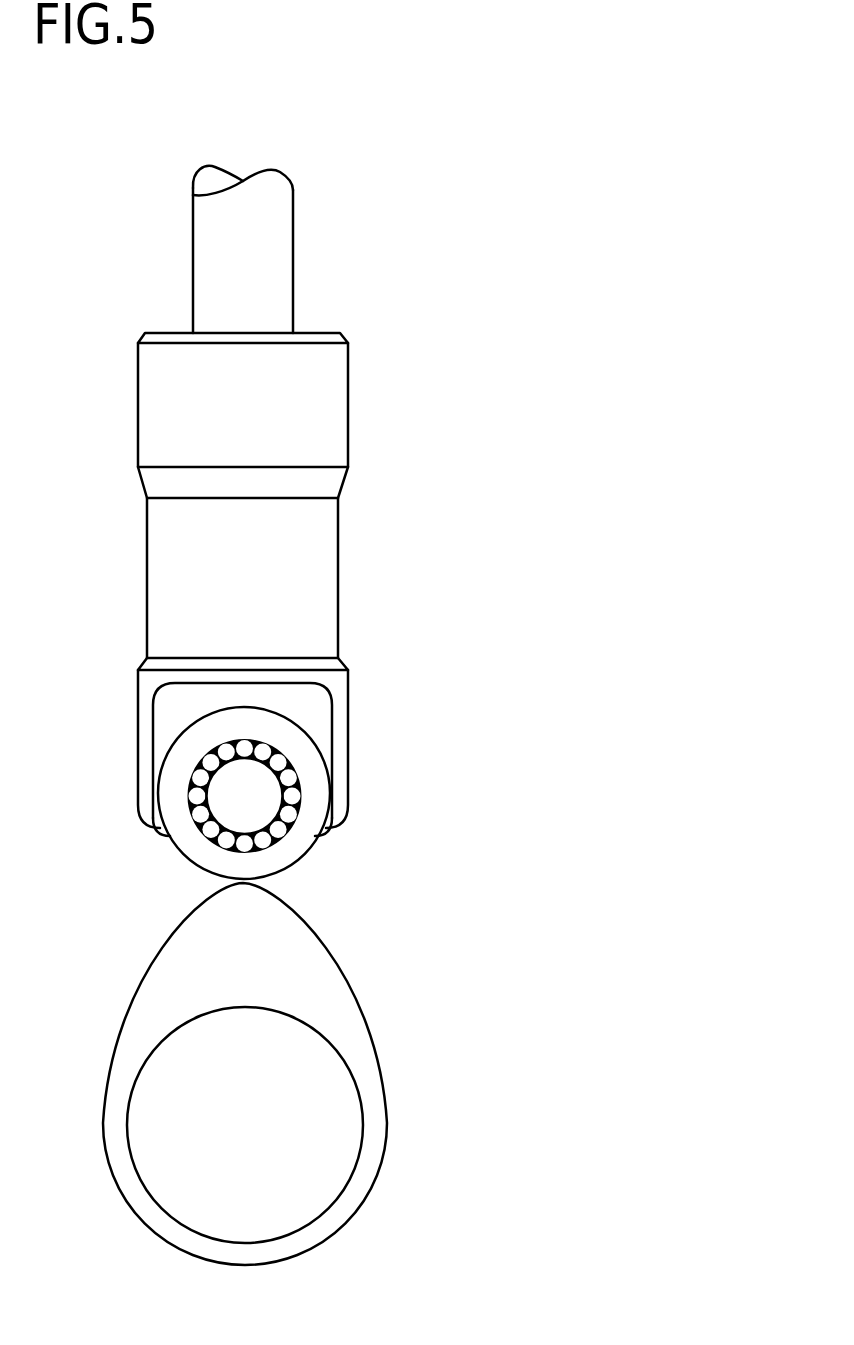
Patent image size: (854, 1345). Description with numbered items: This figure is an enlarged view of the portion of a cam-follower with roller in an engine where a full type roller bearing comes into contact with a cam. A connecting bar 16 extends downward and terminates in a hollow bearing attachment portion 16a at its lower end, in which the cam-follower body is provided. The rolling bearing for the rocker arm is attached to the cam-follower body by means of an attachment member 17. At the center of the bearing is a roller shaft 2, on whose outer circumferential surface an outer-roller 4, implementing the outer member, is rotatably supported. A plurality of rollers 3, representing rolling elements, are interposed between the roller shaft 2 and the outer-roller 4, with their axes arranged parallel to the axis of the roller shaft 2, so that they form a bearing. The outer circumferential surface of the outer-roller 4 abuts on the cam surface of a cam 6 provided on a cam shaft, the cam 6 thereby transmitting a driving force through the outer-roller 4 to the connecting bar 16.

The connecting bar 16 is at (288, 237).
The bearing attachment portion 16a is at (287, 558).
The attachment member 17 is at (368, 748).
The roller shaft 2 is at (268, 792).
The roller 3 is at (223, 840).
The outer-roller 4 is at (308, 852).
The cam 6 is at (283, 960).